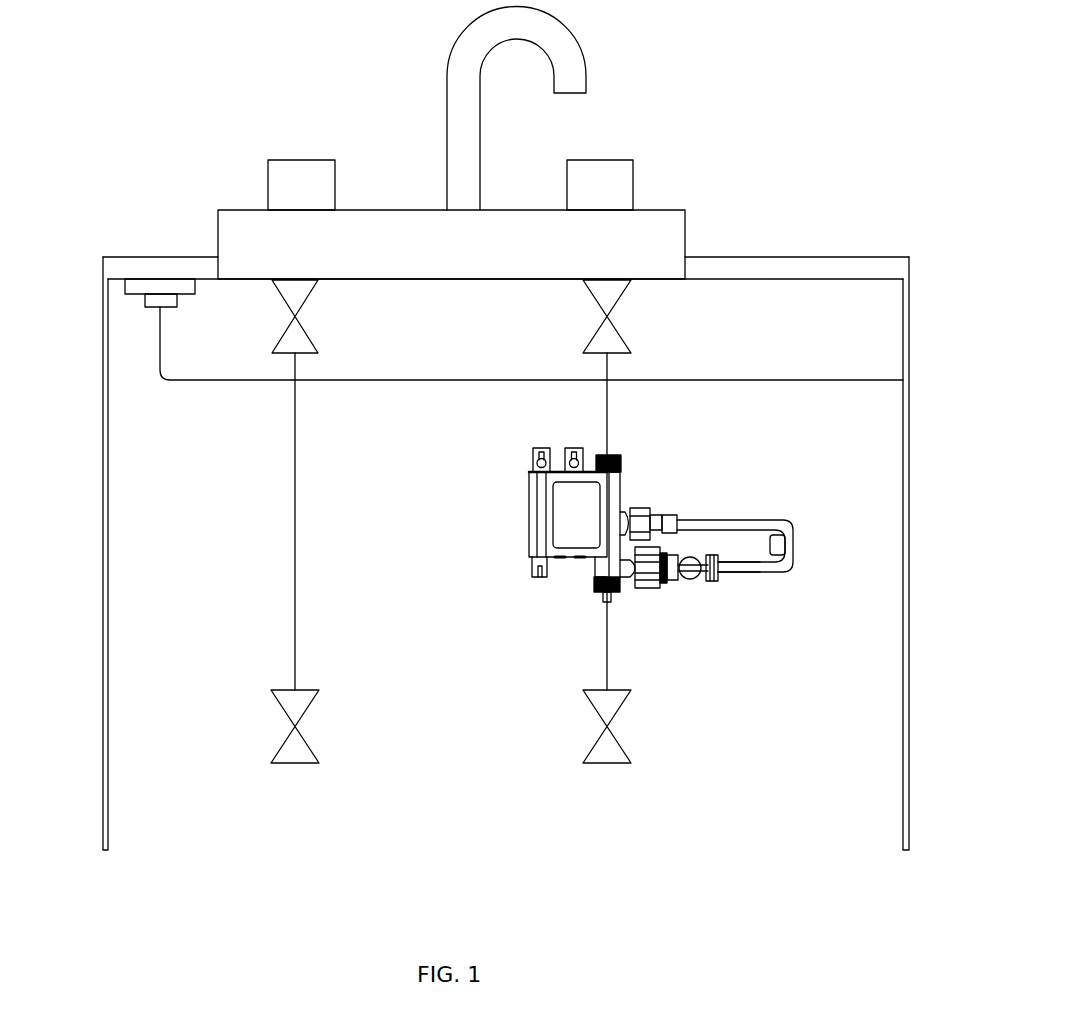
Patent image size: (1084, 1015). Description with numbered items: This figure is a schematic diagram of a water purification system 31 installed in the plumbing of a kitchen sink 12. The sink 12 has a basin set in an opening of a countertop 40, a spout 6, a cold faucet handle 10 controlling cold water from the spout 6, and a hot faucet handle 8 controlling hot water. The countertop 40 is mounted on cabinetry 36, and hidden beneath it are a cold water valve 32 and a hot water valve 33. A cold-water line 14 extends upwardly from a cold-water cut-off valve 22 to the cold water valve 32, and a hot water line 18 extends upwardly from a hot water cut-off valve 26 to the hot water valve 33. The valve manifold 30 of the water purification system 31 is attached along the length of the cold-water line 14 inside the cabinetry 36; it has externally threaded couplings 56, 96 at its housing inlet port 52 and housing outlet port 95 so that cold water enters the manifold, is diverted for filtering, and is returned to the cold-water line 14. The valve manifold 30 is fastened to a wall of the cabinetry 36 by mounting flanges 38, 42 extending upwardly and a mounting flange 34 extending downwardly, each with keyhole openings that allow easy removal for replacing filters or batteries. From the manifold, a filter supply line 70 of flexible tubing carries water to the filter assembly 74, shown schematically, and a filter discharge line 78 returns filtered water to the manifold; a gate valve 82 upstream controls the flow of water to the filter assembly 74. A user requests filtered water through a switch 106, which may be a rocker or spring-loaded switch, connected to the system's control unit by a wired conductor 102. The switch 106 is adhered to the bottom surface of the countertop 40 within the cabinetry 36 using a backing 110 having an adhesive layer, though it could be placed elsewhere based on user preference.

The spout 6 is at (575, 35).
The hot faucet handle 8 is at (302, 160).
The cold faucet handle 10 is at (605, 160).
The kitchen sink 12 is at (673, 149).
The countertop 40 is at (158, 257).
The cabinetry 36 is at (885, 328).
The backing 110 is at (125, 285).
The switch 106 is at (178, 300).
The wired conductor 102 is at (466, 385).
The hot water valve 33 is at (300, 340).
The cold water valve 32 is at (622, 295).
The hot water line 18 is at (296, 530).
The cold-water line 14 is at (608, 413).
The hot water cut-off valve 26 is at (300, 718).
The cold-water cut-off valve 22 is at (614, 710).
The valve manifold 30 is at (570, 525).
The mounting flange 38 is at (541, 448).
The mounting flange 42 is at (573, 448).
The externally threaded coupling 96 is at (622, 463).
The housing outlet port 95 is at (612, 455).
The mounting flange 34 is at (528, 572).
The externally threaded coupling 56 is at (593, 588).
The housing inlet port 52 is at (612, 597).
The water purification system 31 is at (626, 499).
The filter discharge line 78 is at (700, 522).
The filter assembly 74 is at (788, 545).
The filter supply line 70 is at (776, 573).
The gate valve 82 is at (690, 580).